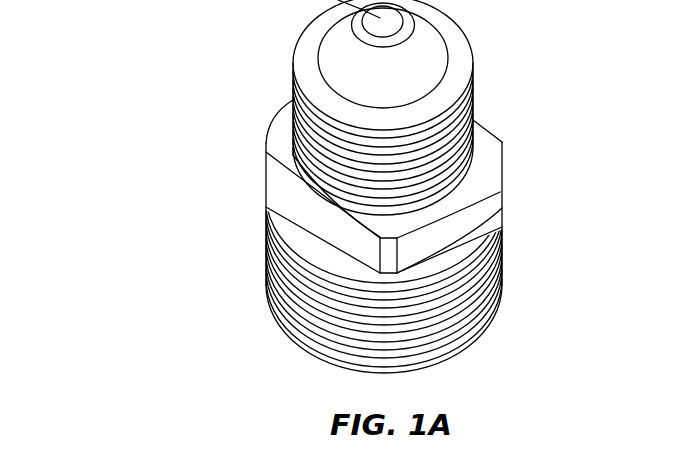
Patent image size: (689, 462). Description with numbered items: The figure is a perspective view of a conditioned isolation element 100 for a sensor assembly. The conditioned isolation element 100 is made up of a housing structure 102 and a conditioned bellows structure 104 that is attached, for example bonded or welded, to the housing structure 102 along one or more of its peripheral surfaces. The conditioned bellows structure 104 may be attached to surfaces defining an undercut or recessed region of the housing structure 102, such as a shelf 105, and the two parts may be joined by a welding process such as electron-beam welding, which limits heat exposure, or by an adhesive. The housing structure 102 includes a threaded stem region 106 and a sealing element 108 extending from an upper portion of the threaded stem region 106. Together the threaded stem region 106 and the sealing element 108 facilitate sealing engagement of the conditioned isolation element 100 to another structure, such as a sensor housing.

The conditioned isolation element 100 is at (197, 93).
The housing structure 102 is at (307, 203).
The conditioned bellows structure 104 is at (509, 242).
The shelf 105 is at (465, 235).
The threaded stem region 106 is at (480, 96).
The sealing element 108 is at (418, 50).